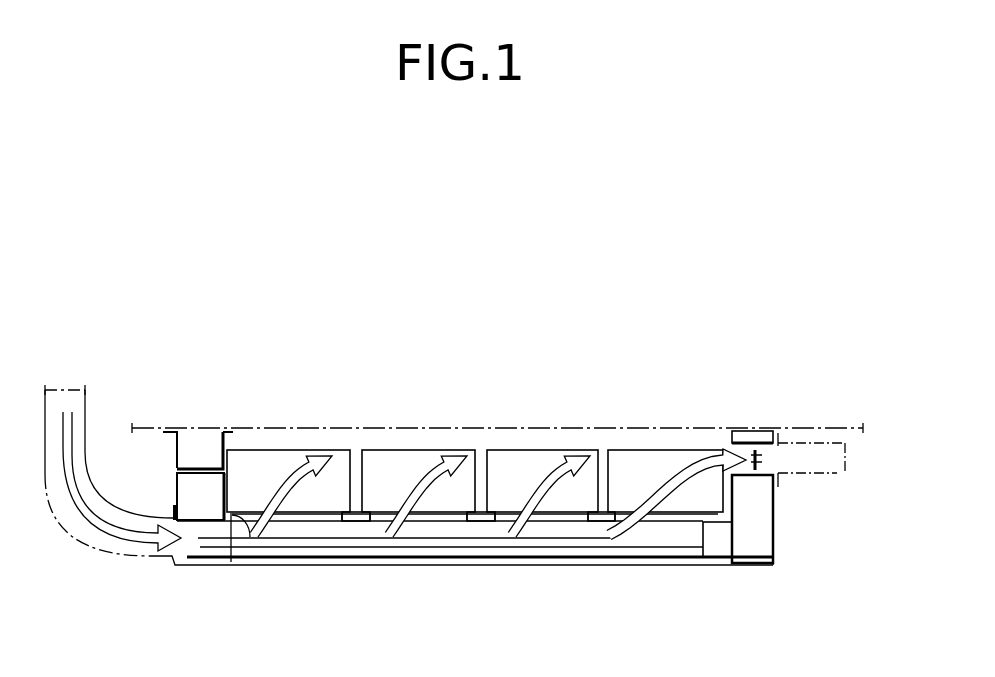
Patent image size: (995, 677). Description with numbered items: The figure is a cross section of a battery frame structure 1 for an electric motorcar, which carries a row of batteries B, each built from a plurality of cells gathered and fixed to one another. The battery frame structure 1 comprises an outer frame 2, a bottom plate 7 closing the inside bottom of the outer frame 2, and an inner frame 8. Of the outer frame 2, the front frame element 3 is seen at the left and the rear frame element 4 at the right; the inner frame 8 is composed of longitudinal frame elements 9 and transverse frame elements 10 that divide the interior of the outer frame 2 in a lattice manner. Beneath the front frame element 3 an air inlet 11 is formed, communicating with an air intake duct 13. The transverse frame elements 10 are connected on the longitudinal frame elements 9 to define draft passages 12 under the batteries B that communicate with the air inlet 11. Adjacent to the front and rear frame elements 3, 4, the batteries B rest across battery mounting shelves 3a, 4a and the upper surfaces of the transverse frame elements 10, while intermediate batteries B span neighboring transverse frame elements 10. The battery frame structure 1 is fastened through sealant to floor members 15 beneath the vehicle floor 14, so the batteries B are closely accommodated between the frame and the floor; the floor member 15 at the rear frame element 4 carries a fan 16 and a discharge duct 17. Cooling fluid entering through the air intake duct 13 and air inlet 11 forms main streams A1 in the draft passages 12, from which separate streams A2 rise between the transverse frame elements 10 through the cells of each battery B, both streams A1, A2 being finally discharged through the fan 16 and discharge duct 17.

The battery frame structure 1 is at (475, 498).
The outer frame 2 is at (475, 536).
The front frame element 3 is at (175, 490).
The battery mounting shelf 3a is at (247, 515).
The rear frame element 4 is at (775, 507).
The battery mounting shelf 4a is at (704, 528).
The bottom plate 7 is at (505, 560).
The inner frame 8 is at (337, 503).
The longitudinal frame element 9 is at (452, 510).
The transverse frame element 10 is at (325, 522).
The air inlet 11 is at (185, 560).
The draft passage 12 is at (636, 552).
The air intake duct 13 is at (92, 540).
The vehicle floor 14 is at (808, 428).
The floor member 15 is at (175, 452).
The fan 16 is at (765, 437).
The discharge duct 17 is at (837, 478).
The main stream A1 is at (383, 540).
The separate stream A2 is at (280, 485).
The battery B is at (240, 450).